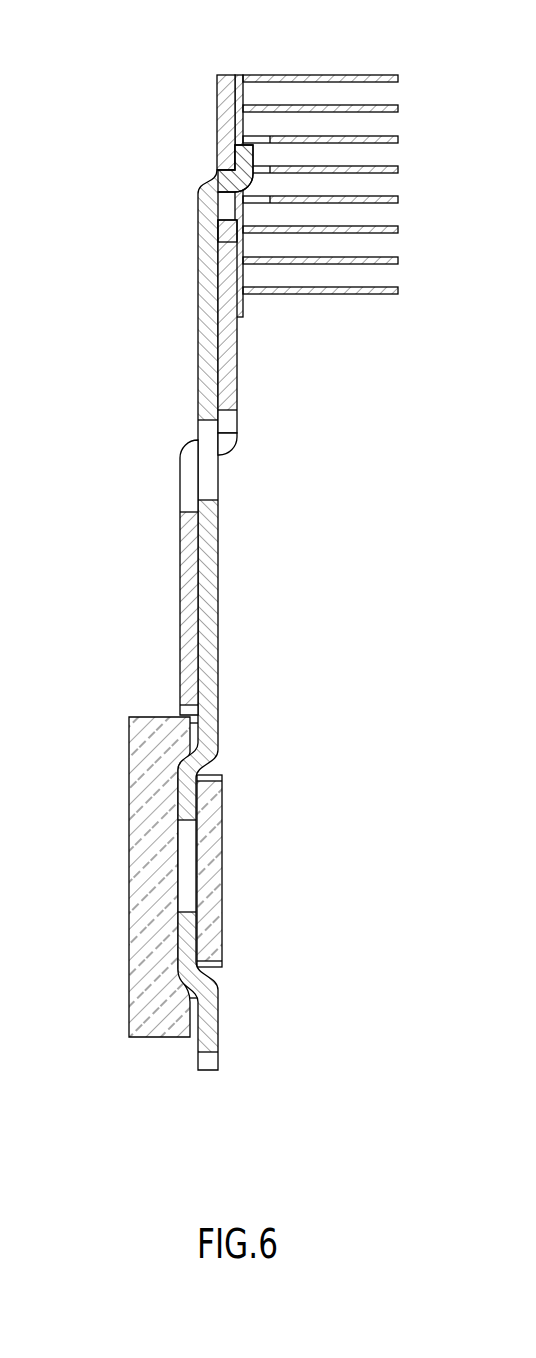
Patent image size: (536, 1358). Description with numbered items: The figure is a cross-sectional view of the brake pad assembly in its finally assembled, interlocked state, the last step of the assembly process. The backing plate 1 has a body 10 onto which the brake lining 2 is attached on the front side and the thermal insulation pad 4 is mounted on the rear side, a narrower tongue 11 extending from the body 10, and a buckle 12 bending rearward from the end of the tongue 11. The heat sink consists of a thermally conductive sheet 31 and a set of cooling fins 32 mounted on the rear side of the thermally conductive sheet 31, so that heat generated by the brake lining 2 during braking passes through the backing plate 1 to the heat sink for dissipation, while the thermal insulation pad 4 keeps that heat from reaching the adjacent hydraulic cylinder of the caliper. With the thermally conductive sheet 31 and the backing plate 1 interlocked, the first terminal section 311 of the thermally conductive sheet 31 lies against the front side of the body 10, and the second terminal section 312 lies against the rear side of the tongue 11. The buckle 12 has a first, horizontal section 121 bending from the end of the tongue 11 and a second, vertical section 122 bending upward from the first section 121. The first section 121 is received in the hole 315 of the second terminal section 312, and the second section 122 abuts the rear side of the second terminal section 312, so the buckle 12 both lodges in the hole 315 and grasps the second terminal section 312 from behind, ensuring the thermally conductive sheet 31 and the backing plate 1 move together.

The backing plate 1 is at (217, 607).
The body 10 is at (218, 645).
The tongue 11 is at (198, 303).
The buckle 12 is at (141, 122).
The first horizontal section 121 is at (223, 183).
The second vertical section 122 is at (247, 153).
The brake lining 2 is at (130, 897).
The thermally conductive sheet 31 is at (205, 470).
The first terminal section 311 is at (180, 572).
The second terminal section 312 is at (237, 387).
The hole 315 is at (223, 217).
The cooling fins 32 is at (347, 75).
The thermal insulation pad 4 is at (222, 891).